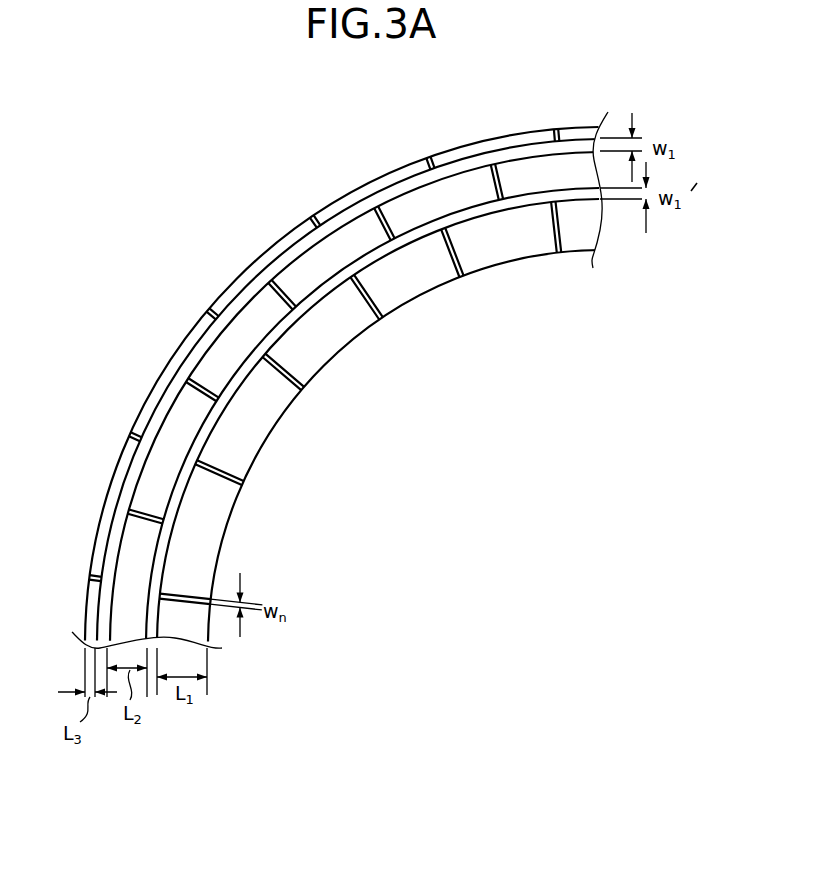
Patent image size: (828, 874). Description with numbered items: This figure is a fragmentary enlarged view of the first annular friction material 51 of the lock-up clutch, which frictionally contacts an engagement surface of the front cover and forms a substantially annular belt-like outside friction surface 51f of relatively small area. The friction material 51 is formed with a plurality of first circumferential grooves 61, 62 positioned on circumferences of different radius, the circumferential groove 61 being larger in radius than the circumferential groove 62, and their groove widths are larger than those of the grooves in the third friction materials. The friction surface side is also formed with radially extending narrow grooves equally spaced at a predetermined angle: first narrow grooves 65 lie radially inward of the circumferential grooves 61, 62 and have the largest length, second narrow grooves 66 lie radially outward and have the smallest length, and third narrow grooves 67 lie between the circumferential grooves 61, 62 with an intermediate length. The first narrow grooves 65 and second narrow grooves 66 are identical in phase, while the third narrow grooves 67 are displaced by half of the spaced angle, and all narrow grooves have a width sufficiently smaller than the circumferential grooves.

The first annular friction material 51 is at (338, 355).
The outside friction surface 51f is at (422, 290).
The first circumferential groove 61 is at (402, 188).
The first circumferential groove 62 is at (322, 295).
The first narrow groove 65 is at (238, 482).
The second narrow groove 66 is at (210, 313).
The third narrow groove 67 is at (188, 383).